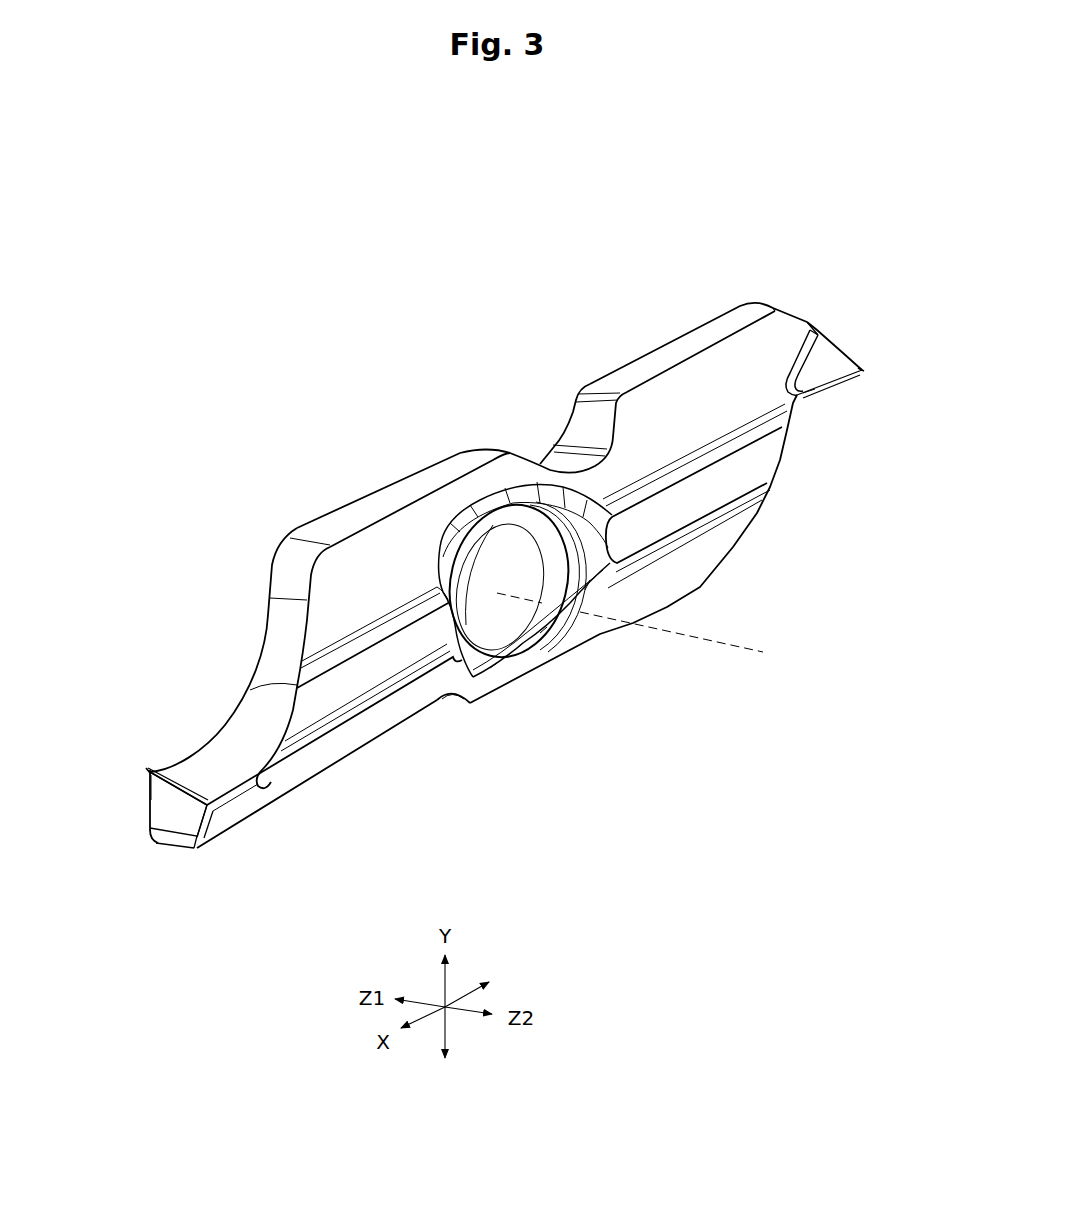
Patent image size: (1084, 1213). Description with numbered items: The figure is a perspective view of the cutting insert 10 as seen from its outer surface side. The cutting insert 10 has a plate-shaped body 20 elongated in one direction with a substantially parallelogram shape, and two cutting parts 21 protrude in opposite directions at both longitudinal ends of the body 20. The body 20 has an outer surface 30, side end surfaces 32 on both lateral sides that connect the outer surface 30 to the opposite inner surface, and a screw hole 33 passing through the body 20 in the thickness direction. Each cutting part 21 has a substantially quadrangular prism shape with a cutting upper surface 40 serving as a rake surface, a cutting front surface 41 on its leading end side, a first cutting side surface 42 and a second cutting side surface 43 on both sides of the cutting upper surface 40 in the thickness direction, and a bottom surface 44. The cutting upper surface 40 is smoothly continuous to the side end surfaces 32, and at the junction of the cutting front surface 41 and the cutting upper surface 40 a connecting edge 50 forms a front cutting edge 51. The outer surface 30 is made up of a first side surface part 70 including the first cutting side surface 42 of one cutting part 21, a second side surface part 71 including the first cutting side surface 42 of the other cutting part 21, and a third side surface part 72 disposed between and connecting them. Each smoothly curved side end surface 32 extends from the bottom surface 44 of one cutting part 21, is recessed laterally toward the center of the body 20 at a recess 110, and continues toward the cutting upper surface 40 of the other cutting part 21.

The cutting insert 10 is at (474, 268).
The body 20 is at (357, 490).
The cutting part 21 is at (147, 770).
The outer surface 30 is at (648, 590).
The side end surface 32 is at (423, 477).
The screw hole 33 is at (520, 610).
The cutting upper surface 40 is at (203, 780).
The cutting front surface 41 is at (167, 810).
The first cutting side surface 42 is at (213, 817).
The second cutting side surface 43 is at (147, 807).
The bottom surface 44 is at (177, 847).
The connecting edge 50 is at (183, 773).
The front cutting edge 51 is at (147, 790).
The first side surface part 70 is at (358, 733).
The second side surface part 71 is at (340, 570).
The third side surface part 72 is at (407, 657).
The recess 110 is at (557, 455).